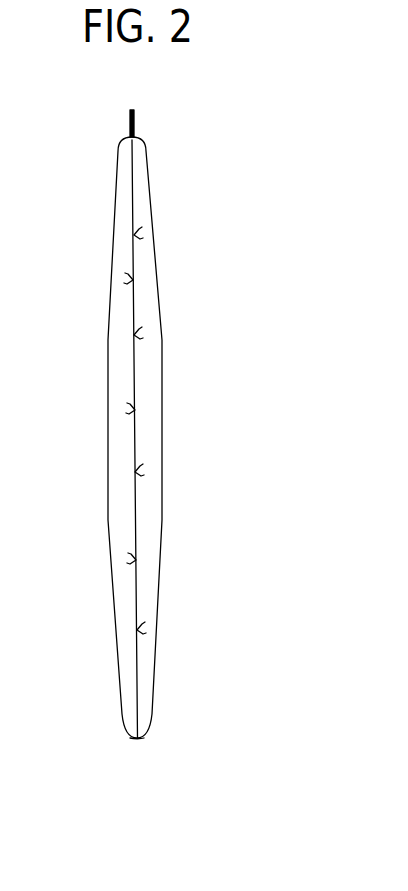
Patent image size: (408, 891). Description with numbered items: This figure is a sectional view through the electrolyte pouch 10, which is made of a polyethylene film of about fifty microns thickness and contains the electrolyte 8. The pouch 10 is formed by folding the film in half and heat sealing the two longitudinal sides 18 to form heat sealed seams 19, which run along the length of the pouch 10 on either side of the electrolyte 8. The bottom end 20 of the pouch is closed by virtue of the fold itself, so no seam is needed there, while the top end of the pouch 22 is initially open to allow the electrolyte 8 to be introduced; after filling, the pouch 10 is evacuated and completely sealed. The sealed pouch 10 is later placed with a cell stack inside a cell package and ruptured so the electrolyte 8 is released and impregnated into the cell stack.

The sealed pouch 10 is at (186, 448).
The electrolyte 8 is at (155, 390).
The longitudinal sides 18 is at (137, 510).
The heat sealed seams 19 is at (136, 580).
The top end of the pouch 22 is at (134, 118).
The bottom end of the pouch 20 is at (141, 738).